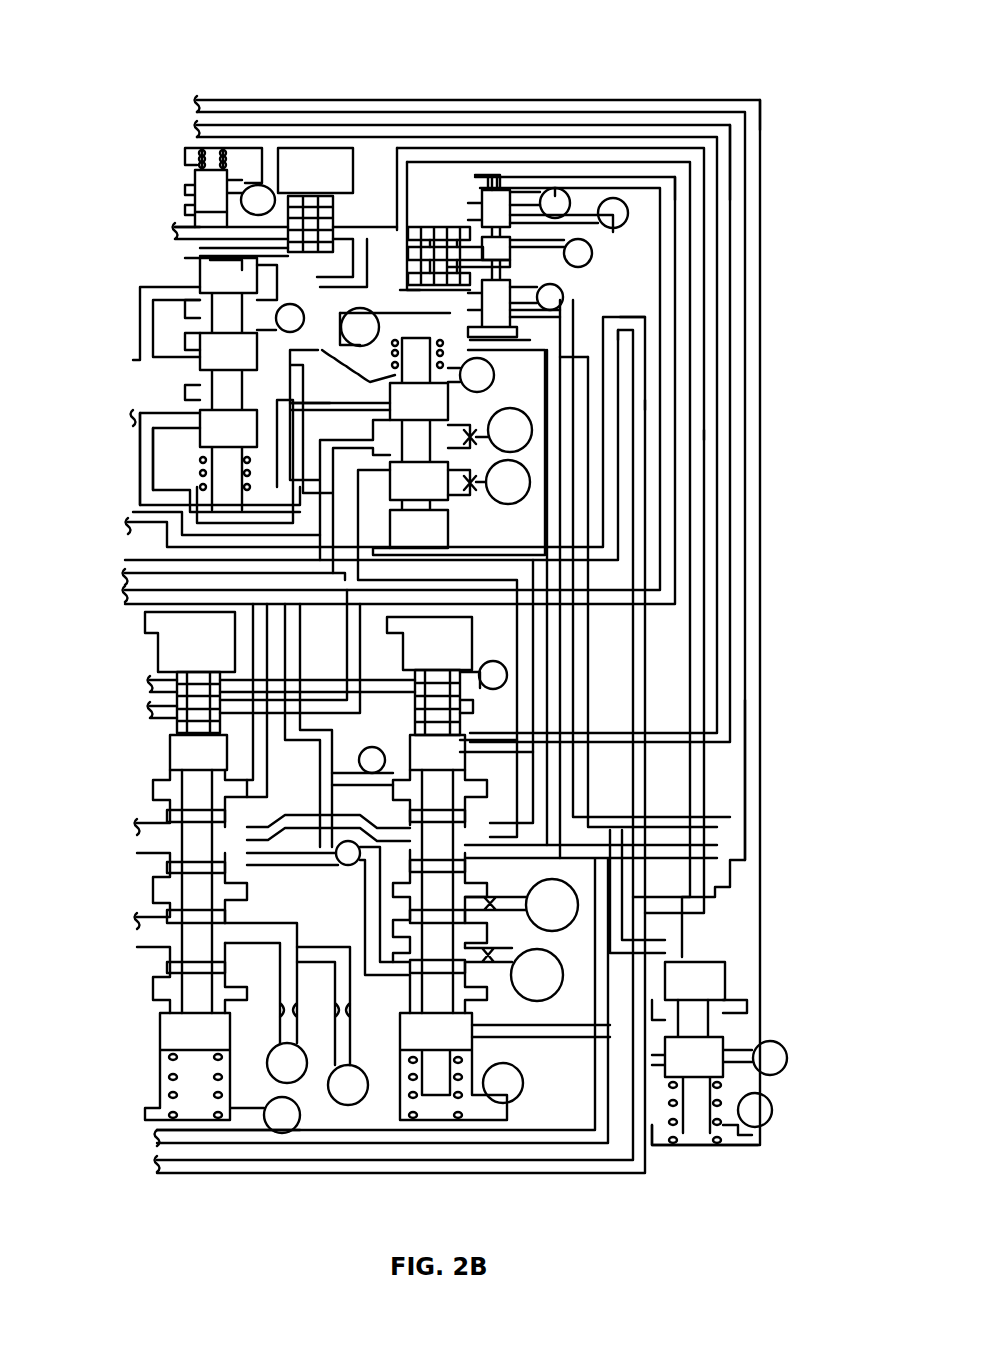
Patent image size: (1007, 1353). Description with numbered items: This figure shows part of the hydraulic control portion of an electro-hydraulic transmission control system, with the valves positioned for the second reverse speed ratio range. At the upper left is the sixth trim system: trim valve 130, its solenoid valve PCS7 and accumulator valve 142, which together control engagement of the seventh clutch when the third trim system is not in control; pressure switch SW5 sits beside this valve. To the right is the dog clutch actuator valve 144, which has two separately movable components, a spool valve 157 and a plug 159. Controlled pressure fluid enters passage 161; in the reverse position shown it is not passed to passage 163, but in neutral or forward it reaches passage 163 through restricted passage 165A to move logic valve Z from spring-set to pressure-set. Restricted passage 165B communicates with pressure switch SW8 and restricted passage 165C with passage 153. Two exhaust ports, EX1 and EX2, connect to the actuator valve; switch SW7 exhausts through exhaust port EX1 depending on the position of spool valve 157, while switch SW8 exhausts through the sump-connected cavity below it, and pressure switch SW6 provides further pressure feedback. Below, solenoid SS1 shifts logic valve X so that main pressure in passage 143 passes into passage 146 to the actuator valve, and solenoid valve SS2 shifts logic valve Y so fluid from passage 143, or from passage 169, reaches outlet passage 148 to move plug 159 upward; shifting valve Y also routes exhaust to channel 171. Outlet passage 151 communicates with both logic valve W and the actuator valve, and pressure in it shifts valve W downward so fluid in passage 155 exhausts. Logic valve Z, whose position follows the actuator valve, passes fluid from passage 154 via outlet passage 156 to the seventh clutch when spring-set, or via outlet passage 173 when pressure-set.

The accumulator valve 142 is at (233, 176).
The restricted passage 165A is at (455, 272).
The restricted passage 165B is at (445, 255).
The restricted passage 165C is at (430, 240).
The spool valve 157 is at (498, 185).
The exhaust port EX1 is at (568, 200).
The passage 146 is at (600, 205).
The passage 163 is at (680, 185).
The pressure switch SW7 is at (762, 125).
The pressure switch SW8 is at (735, 205).
The exhaust port EX2 is at (655, 290).
The plug 159 is at (640, 300).
The outlet passage 148 is at (590, 360).
The passage 153 is at (620, 345).
The outlet passage 151 is at (650, 405).
The pressure switch SW6 is at (700, 442).
The passage 161 is at (365, 215).
The trim valve 130 is at (265, 305).
The dog clutch actuator valve 144 is at (462, 300).
The outlet passage 156 is at (165, 480).
The passage 154 is at (174, 459).
The outlet passage 173 is at (330, 405).
The channel 171 is at (740, 780).
The passage 143 is at (165, 832).
The passage 169 is at (378, 835).
The passage 155 is at (527, 1040).
The pressure switch SW5 is at (257, 283).
The solenoid valve PCS7 is at (315, 200).
The logic valve Z is at (417, 440).
The solenoid SS1 is at (280, 718).
The solenoid valve SS2 is at (460, 693).
The logic valve W is at (719, 1053).